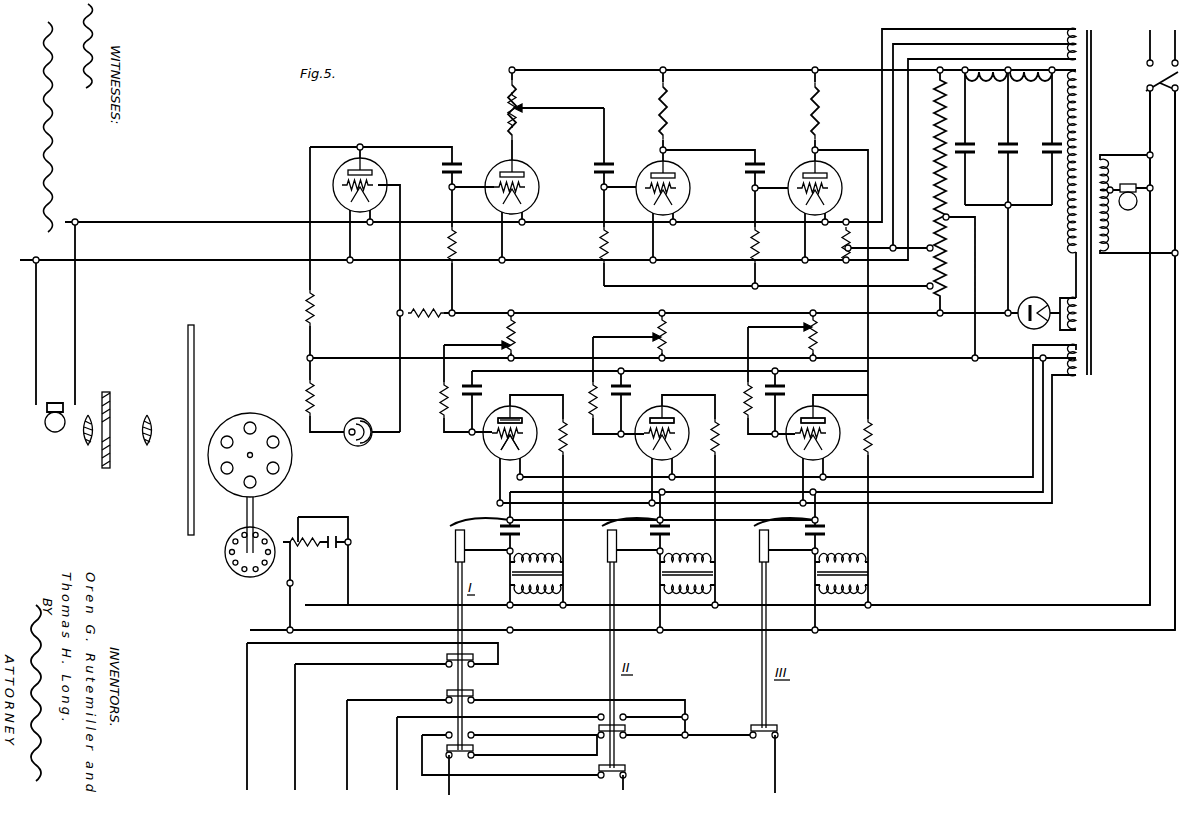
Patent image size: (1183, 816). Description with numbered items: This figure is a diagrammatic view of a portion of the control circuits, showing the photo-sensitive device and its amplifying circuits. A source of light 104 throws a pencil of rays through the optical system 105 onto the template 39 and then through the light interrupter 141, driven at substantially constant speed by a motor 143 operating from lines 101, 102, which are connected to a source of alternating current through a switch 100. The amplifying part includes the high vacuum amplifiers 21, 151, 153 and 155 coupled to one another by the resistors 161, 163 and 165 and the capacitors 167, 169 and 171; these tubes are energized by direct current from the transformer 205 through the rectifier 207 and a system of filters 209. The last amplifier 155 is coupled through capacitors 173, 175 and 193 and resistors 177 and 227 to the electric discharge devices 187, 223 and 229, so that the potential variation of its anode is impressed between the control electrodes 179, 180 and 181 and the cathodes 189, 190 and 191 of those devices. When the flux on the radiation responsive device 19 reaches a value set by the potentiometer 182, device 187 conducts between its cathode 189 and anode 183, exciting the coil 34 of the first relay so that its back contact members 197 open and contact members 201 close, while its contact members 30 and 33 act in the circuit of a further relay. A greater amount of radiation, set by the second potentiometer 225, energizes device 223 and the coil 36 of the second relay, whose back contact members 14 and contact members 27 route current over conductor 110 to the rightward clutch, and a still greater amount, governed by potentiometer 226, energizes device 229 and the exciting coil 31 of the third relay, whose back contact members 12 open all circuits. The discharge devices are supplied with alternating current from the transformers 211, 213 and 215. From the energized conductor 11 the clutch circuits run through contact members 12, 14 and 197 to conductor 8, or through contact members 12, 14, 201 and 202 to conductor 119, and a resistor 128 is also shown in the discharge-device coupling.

The high vacuum amplifier 21 is at (380, 174).
The capacitor 167 is at (458, 166).
The high vacuum amplifier 151 is at (528, 170).
The capacitor 169 is at (608, 165).
The high vacuum amplifier 153 is at (680, 178).
The capacitor 171 is at (760, 165).
The high vacuum amplifier 155 is at (832, 178).
The resistor 161 is at (455, 244).
The resistor 163 is at (600, 245).
The resistor 165 is at (752, 245).
The system of filters 209 is at (1034, 185).
The line switch 100 is at (1146, 86).
The rectifier 207 is at (1034, 297).
The transformer 205 is at (1130, 285).
The line 101 is at (1150, 406).
The line 102 is at (1175, 446).
The potentiometer 182 is at (515, 338).
The second potentiometer 225 is at (668, 340).
The potentiometer 226 is at (820, 340).
The capacitor 173 is at (482, 389).
The anode 183 is at (503, 404).
The electric discharge device 187 is at (520, 396).
The capacitor 175 is at (630, 389).
The resistor 128 is at (746, 400).
The capacitor 193 is at (784, 389).
The resistor 177 is at (440, 422).
The control electrode 179 is at (490, 445).
The cathode 189 is at (522, 455).
The resistor 227 is at (567, 441).
The control electrode 180 is at (640, 445).
The cathode 190 is at (712, 455).
The electric discharge device 223 is at (672, 414).
The control electrode 181 is at (790, 446).
The cathode 191 is at (862, 452).
The third device 229 is at (825, 414).
The radiation responsive device 19 is at (368, 445).
The light interrupter 141 is at (292, 466).
The motor 143 is at (252, 601).
The template 39 is at (194, 381).
The optical system 105 is at (142, 401).
The source of light 104 is at (50, 440).
The exciting coil 34 is at (455, 538).
The coil 36 is at (606, 530).
The exciting coil 31 is at (762, 530).
The transformer 211 is at (594, 598).
The transformer 213 is at (744, 585).
The transformer 215 is at (897, 585).
The contact members 30 is at (470, 665).
The contact members 33 is at (476, 695).
The contact members 201 is at (472, 735).
The back contact members 197 is at (472, 758).
The conductor 110 is at (397, 768).
The conductor 8 is at (449, 788).
The contact members 27 is at (615, 717).
The back contact members 14 is at (625, 743).
The contact members 202 is at (626, 777).
The conductor 119 is at (623, 792).
The back contact members 12 is at (760, 742).
The conductor 11 is at (776, 780).